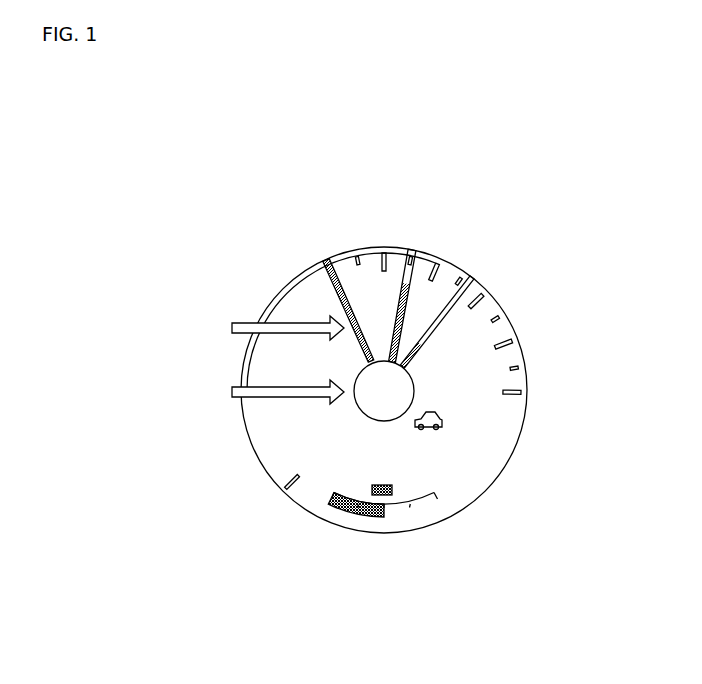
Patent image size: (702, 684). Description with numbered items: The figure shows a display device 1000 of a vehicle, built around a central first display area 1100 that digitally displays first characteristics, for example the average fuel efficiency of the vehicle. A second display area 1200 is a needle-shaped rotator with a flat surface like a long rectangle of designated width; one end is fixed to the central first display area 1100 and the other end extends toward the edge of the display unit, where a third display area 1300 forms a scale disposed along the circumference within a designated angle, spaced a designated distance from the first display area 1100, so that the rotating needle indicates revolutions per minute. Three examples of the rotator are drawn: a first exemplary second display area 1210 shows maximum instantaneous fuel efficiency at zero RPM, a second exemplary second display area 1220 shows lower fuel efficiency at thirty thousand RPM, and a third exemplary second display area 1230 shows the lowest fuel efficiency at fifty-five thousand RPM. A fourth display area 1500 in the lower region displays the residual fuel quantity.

The display device 1000 is at (521, 153).
The first display area 1100 is at (199, 422).
The second display area 1200 is at (199, 303).
The first exemplary second display area 1210 is at (326, 255).
The second exemplary second display area 1220 is at (413, 248).
The third exemplary second display area 1230 is at (471, 278).
The third display area 1300 is at (510, 338).
The fourth display area 1500 is at (343, 513).